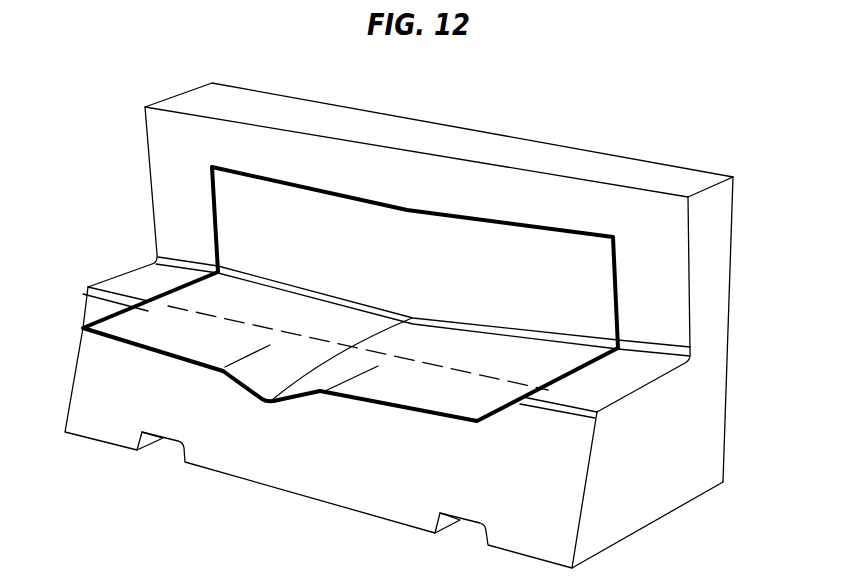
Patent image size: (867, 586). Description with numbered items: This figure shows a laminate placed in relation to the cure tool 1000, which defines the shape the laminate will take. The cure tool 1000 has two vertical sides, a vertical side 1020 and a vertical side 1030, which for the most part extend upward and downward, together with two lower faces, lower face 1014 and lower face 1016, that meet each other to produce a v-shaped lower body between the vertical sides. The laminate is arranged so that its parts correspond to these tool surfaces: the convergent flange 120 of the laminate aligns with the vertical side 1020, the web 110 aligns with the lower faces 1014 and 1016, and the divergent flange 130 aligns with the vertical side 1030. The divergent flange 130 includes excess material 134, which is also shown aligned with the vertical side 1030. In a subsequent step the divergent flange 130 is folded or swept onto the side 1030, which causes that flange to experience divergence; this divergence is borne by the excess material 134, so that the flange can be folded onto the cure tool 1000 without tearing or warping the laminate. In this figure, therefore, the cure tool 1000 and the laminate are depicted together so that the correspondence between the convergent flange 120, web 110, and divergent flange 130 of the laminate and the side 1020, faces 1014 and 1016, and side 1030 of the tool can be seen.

The cure tool 1000 is at (728, 119).
The vertical side 1020 is at (167, 147).
The vertical side 1030 is at (373, 487).
The lower face 1014 is at (131, 283).
The lower face 1016 is at (631, 374).
The convergent flange 120 is at (316, 213).
The web 110 is at (318, 318).
The divergent flange 130 is at (112, 327).
The excess material 134 is at (263, 400).